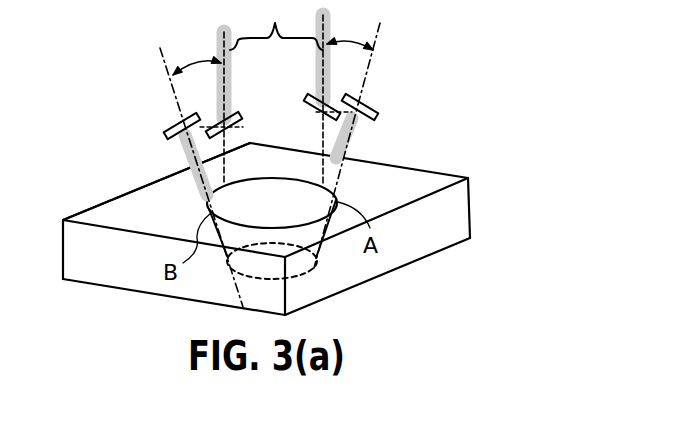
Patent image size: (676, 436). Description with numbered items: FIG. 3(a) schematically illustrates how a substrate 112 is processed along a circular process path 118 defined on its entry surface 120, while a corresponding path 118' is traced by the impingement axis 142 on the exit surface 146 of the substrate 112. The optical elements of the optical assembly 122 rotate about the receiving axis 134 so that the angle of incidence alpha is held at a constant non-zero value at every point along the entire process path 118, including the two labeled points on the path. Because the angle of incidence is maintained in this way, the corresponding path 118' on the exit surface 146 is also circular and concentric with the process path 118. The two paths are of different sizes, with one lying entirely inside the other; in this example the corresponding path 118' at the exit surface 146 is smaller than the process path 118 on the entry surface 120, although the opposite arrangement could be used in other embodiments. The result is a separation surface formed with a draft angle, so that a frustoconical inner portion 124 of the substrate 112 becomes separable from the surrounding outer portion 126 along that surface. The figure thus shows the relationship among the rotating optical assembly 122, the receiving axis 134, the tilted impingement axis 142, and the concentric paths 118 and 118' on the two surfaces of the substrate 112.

The substrate 112 is at (472, 198).
The process path 118 is at (272, 183).
The corresponding path 118' is at (332, 286).
The entry surface 120 is at (421, 185).
The optical assembly 122 is at (166, 122).
The frustoconical inner portion 124 is at (255, 201).
The outer portion 126 is at (133, 207).
The receiving axis 134 is at (268, 97).
The impingement axis 142 is at (170, 80).
The exit surface 146 is at (430, 255).